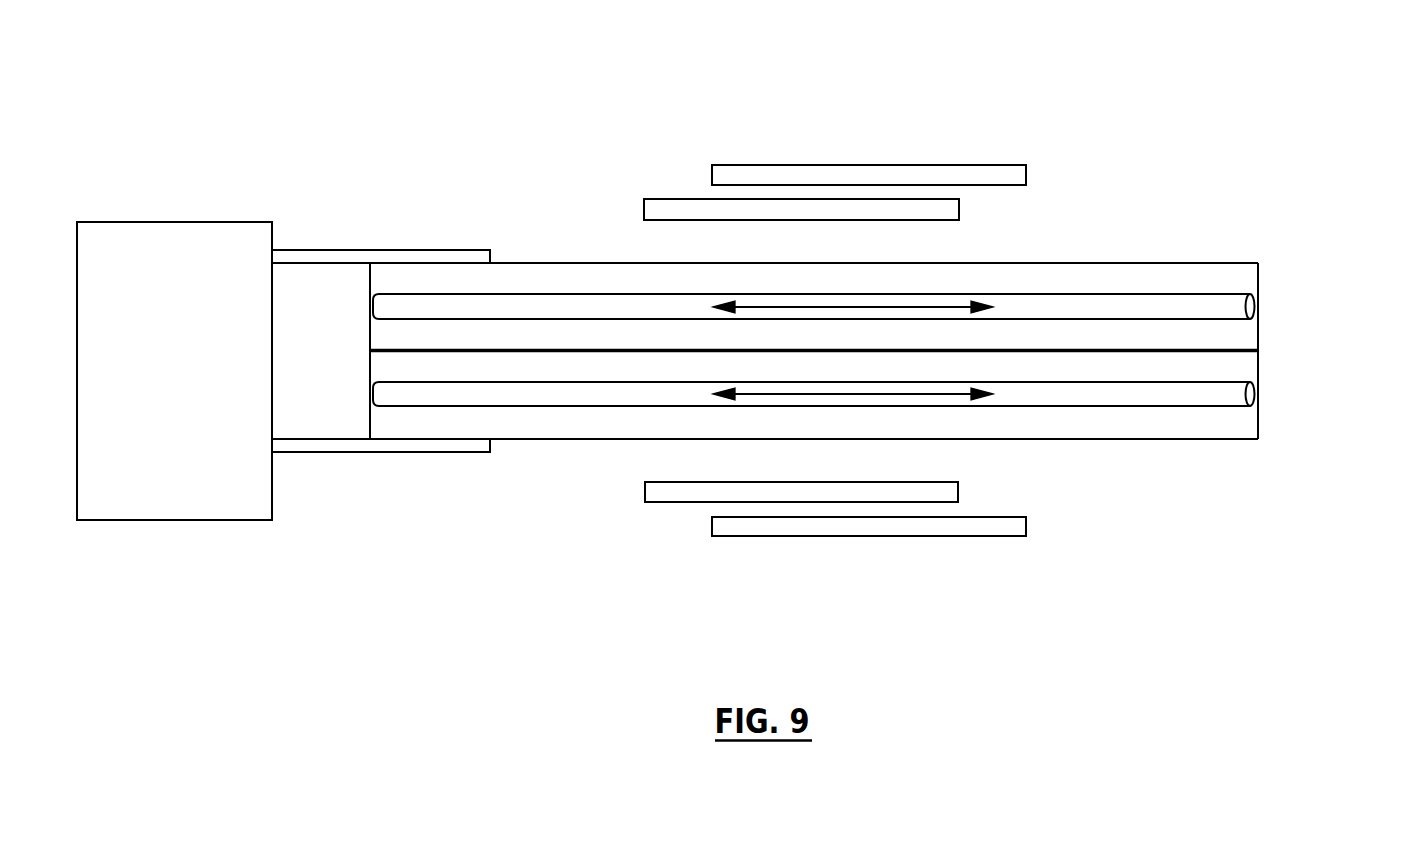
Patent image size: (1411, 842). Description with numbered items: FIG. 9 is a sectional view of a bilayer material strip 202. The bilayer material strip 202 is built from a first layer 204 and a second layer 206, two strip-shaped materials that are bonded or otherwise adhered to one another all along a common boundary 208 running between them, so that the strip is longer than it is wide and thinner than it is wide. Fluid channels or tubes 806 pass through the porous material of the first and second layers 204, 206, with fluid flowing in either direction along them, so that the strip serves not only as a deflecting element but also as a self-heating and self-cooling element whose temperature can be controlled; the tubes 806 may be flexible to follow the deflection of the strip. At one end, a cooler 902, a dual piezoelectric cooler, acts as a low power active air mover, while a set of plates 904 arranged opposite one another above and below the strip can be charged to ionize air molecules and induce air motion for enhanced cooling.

The bilayer material strip 202 is at (1282, 258).
The first layer 204 is at (1138, 278).
The second layer 206 is at (977, 428).
The common boundary 208 is at (428, 353).
The fluid channels or tubes 806 is at (1228, 307).
The cooler 902 is at (148, 384).
The set of plates 904 is at (940, 150).